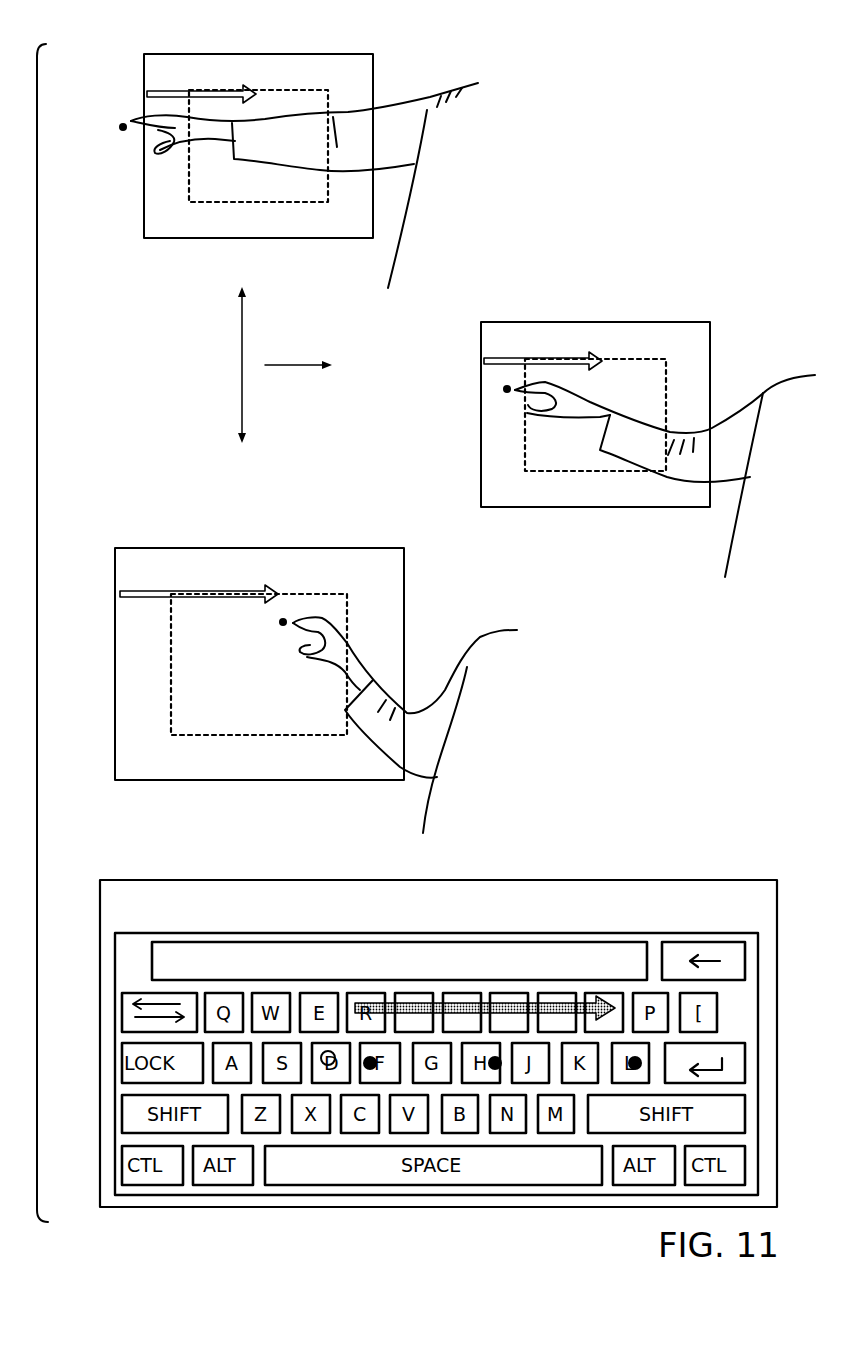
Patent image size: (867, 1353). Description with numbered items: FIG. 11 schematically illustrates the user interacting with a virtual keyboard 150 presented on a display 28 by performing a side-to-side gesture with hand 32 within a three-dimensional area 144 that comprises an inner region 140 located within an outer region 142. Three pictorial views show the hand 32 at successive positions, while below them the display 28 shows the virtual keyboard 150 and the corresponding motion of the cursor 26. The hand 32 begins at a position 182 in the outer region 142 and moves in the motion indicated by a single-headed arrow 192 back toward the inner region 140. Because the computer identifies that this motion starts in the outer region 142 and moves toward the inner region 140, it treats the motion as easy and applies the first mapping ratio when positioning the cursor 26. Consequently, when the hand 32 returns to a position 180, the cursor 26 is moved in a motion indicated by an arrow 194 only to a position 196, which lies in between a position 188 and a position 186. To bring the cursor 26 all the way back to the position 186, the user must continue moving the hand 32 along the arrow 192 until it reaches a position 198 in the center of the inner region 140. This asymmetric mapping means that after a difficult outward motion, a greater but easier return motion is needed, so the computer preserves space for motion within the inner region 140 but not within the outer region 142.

The cursor 26 is at (326, 1050).
The display 28 is at (371, 1208).
The hand 32 is at (188, 115).
The inner 3D region 140 is at (189, 190).
The outer 3D region 142 is at (144, 215).
The 3D area 144 is at (278, 365).
The virtual keyboard 150 is at (265, 1197).
The position 180 is at (503, 389).
The position 182 is at (119, 127).
The position 186 is at (635, 1056).
The position 188 is at (370, 1056).
The single-headed arrow 192 is at (168, 89).
The arrow 194 is at (530, 1000).
The position 196 is at (495, 1056).
The position 198 is at (279, 622).